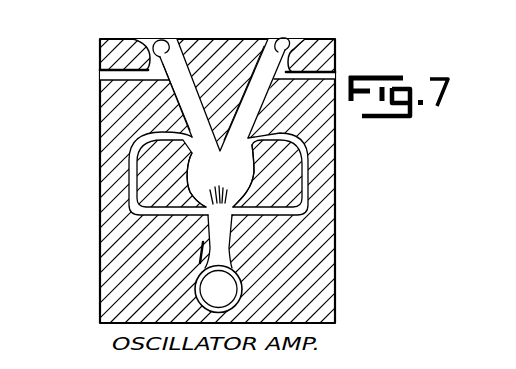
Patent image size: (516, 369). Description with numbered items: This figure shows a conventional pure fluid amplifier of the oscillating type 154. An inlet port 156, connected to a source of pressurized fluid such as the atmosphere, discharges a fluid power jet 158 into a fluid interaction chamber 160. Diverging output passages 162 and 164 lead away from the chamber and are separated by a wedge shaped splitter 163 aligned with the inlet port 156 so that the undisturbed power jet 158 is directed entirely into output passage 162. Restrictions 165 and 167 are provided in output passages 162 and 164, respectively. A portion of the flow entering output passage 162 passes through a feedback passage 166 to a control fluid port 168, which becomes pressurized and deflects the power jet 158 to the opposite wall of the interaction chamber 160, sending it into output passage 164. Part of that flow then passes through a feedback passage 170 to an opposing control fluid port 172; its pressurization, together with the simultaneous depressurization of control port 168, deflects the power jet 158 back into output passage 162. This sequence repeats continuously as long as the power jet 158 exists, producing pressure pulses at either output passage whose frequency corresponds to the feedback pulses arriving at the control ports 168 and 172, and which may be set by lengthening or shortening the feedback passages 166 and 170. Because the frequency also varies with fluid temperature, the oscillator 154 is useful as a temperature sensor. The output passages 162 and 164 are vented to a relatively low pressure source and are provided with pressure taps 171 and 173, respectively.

The pure fluid amplifier of the oscillating type 154 is at (335, 178).
The inlet port 156 is at (226, 298).
The fluid power jet 158 is at (248, 193).
The fluid interaction chamber 160 is at (227, 175).
The output passage 162 is at (138, 39).
The wedge shaped splitter 163 is at (223, 80).
The output passage 164 is at (300, 42).
The restriction 165 is at (148, 38).
The feedback passage 166 is at (129, 178).
The restriction 167 is at (288, 40).
The control fluid port 168 is at (200, 233).
The feedback passage 170 is at (304, 189).
The pressure tap 171 is at (112, 77).
The control fluid port 172 is at (229, 236).
The pressure tap 173 is at (336, 77).